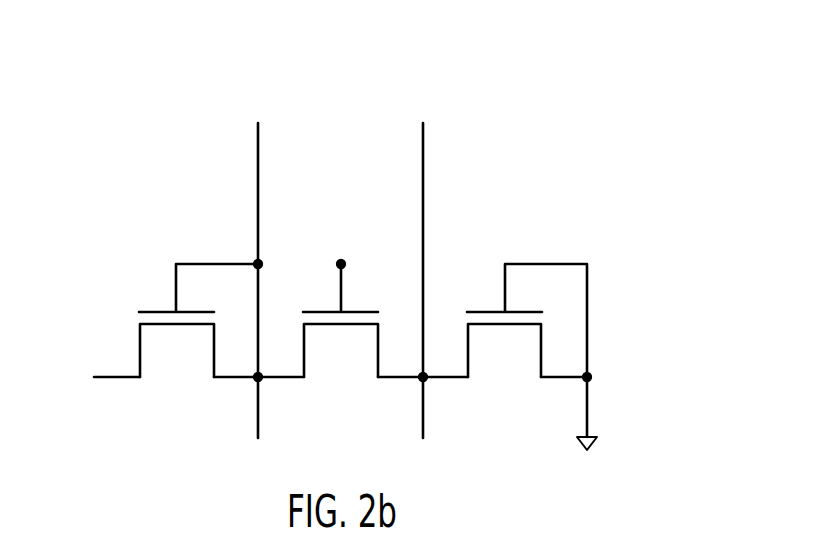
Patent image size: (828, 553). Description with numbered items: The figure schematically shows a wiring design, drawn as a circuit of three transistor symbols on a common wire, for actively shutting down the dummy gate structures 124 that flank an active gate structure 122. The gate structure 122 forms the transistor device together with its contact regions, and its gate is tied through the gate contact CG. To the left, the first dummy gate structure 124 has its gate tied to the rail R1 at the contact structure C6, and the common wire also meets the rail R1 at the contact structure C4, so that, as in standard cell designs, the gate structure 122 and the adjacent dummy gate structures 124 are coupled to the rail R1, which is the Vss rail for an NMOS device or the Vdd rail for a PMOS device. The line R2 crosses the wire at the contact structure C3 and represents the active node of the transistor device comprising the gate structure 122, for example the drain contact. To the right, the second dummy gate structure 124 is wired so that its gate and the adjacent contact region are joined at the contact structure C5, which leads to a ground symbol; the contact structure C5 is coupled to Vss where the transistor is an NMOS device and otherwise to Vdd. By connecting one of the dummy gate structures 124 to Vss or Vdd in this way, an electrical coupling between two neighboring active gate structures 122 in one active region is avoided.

The dummy gate structure 124 is at (153, 295).
The gate structure 122 is at (338, 350).
The contact structure C6 is at (255, 262).
The gate contact CG is at (341, 260).
The contact structure C4 is at (257, 380).
The contact structure C3 is at (425, 380).
The contact structure C5 is at (592, 377).
The rail R1 is at (258, 150).
The line R2 is at (423, 150).